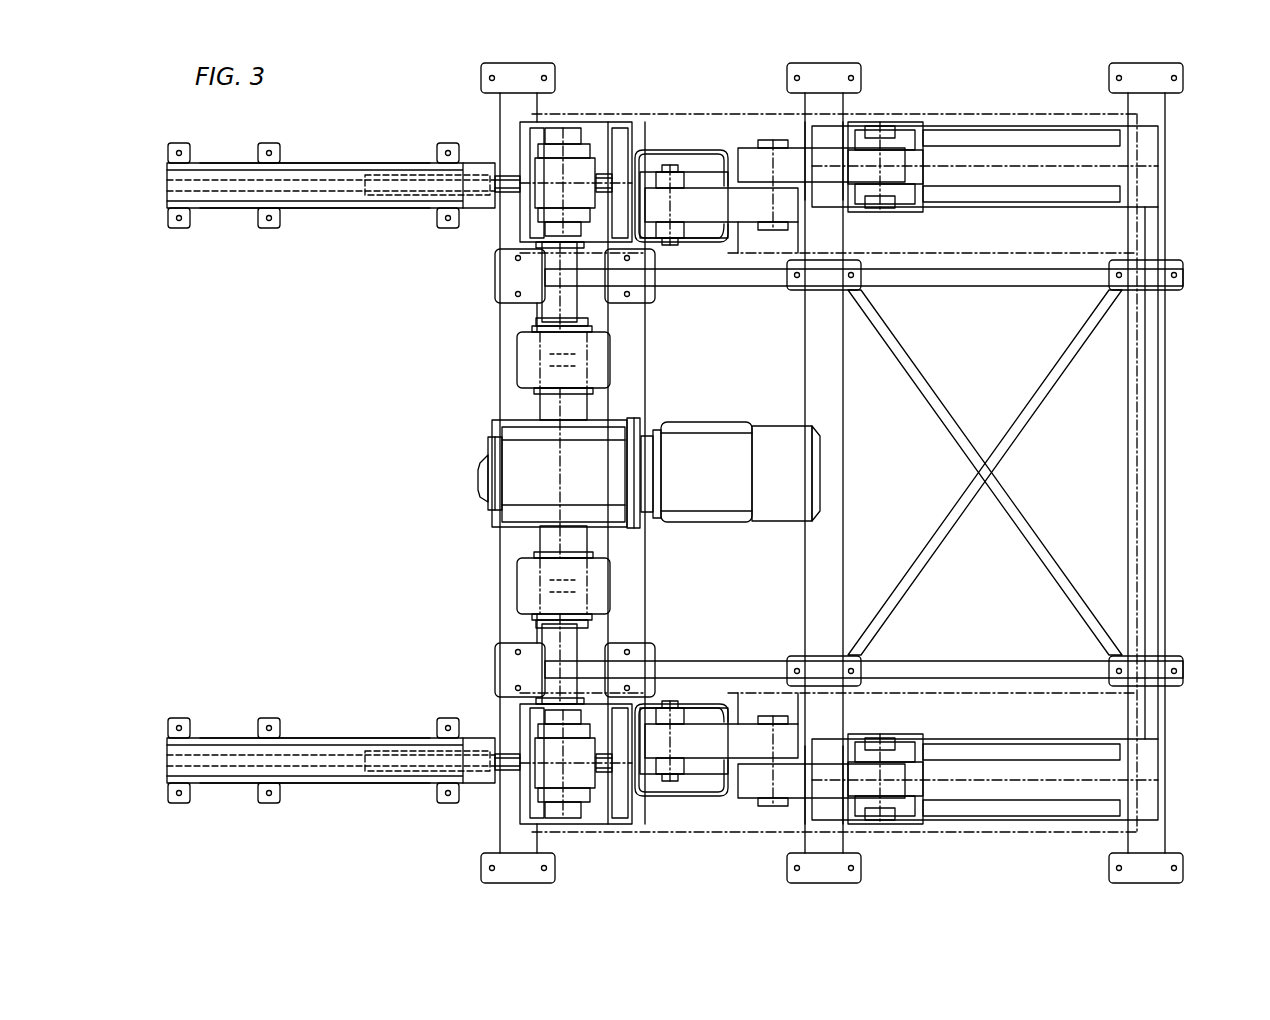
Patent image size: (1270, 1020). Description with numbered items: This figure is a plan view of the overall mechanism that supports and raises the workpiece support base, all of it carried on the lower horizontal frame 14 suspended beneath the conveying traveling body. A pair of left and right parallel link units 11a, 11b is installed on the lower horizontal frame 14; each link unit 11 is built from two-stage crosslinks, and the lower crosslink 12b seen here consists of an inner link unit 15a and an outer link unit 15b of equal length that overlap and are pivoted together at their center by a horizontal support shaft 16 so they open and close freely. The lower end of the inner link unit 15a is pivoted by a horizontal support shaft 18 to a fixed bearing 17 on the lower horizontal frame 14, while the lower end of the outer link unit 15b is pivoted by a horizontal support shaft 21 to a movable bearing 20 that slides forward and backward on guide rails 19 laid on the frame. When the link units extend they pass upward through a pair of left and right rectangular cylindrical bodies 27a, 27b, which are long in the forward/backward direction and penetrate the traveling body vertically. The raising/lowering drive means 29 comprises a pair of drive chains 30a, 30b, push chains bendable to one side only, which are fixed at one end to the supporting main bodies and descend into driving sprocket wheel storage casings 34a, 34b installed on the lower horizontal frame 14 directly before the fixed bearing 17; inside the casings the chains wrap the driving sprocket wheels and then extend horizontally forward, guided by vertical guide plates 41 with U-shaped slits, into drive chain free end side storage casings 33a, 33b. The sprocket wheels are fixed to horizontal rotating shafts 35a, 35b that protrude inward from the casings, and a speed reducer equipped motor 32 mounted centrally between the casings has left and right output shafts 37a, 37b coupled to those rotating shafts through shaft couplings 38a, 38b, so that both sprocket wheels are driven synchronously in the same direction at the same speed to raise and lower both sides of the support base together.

The parallel link unit 11 is at (810, 140).
The parallel link unit 11a is at (748, 722).
The parallel link unit 11b is at (748, 224).
The lower crosslink 12b is at (712, 225).
The lower horizontal frame 14 is at (640, 372).
The inner link unit 15a is at (725, 195).
The outer link unit 15b is at (835, 210).
The horizontal support shaft 16 is at (770, 155).
The fixed bearing 17 is at (668, 175).
The horizontal support shaft 18 is at (665, 256).
The guide rail 19 is at (1060, 196).
The movable bearing 20 is at (880, 145).
The horizontal support shaft 21 is at (910, 163).
The rectangular cylindrical body 27a is at (1012, 690).
The rectangular cylindrical body 27b is at (1002, 258).
The raising/lowering drive means 29 is at (495, 462).
The drive chain 30a is at (398, 752).
The drive chain 30b is at (398, 200).
The speed reducer equipped motor 32 is at (714, 483).
The drive chain free end side storage casing 33a is at (232, 745).
The drive chain free end side storage casing 33b is at (232, 210).
The driving sprocket wheel storage casing 34a is at (520, 780).
The driving sprocket wheel storage casing 34b is at (520, 165).
The horizontal rotating shaft 35a is at (558, 676).
The horizontal rotating shaft 35b is at (558, 270).
The output shaft 37a is at (560, 540).
The output shaft 37b is at (560, 403).
The shaft coupling 38a is at (535, 600).
The shaft coupling 38b is at (535, 355).
The vertical guide plate 41 is at (330, 163).